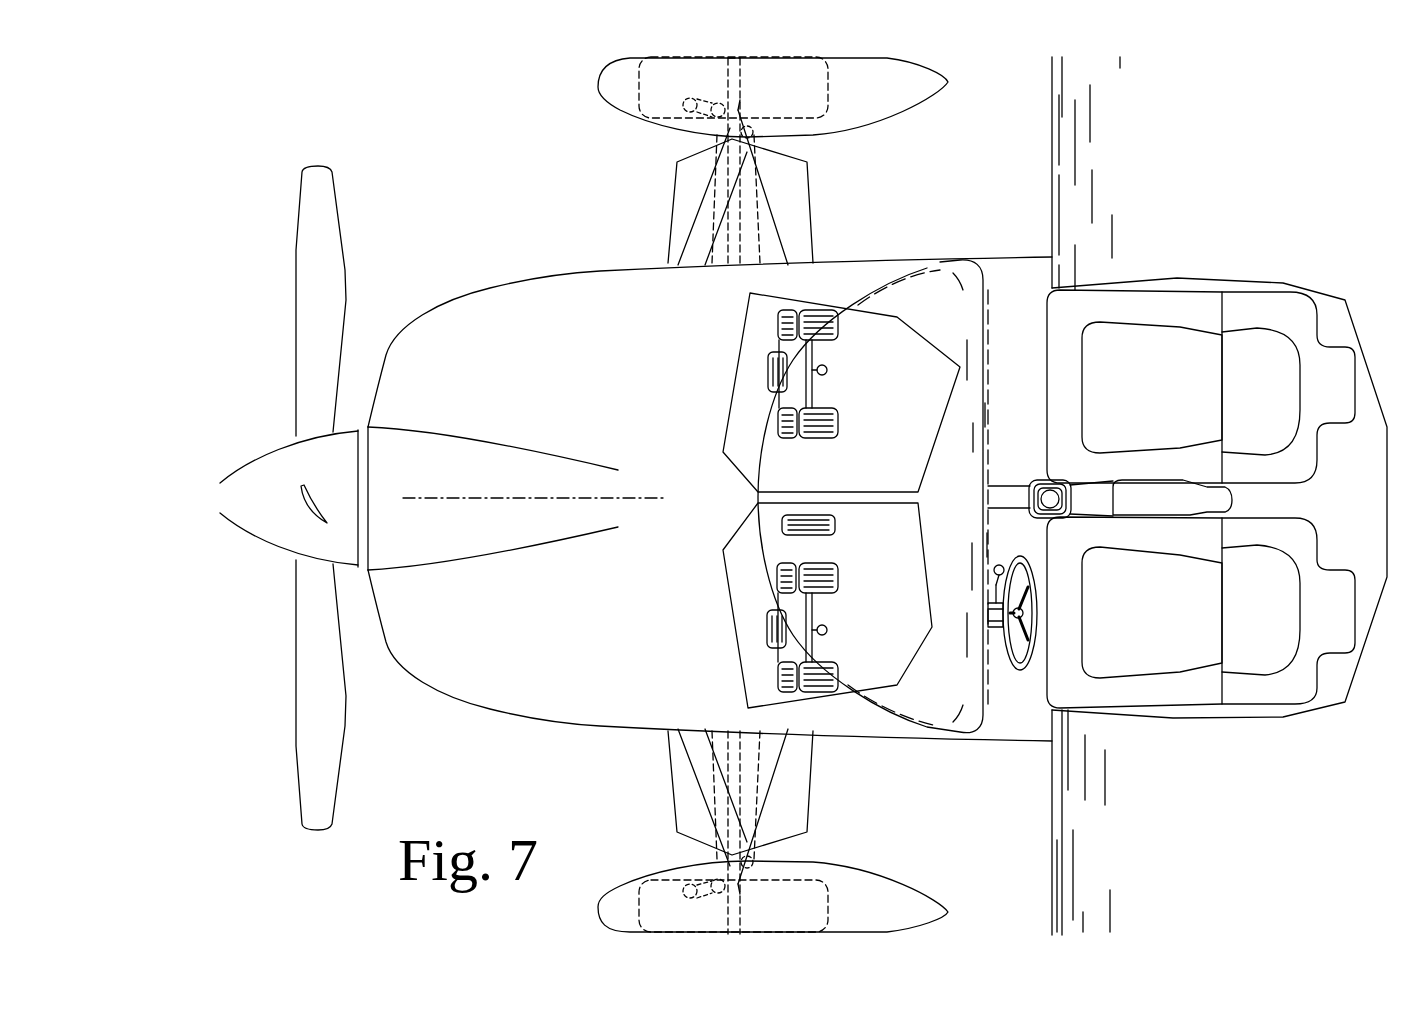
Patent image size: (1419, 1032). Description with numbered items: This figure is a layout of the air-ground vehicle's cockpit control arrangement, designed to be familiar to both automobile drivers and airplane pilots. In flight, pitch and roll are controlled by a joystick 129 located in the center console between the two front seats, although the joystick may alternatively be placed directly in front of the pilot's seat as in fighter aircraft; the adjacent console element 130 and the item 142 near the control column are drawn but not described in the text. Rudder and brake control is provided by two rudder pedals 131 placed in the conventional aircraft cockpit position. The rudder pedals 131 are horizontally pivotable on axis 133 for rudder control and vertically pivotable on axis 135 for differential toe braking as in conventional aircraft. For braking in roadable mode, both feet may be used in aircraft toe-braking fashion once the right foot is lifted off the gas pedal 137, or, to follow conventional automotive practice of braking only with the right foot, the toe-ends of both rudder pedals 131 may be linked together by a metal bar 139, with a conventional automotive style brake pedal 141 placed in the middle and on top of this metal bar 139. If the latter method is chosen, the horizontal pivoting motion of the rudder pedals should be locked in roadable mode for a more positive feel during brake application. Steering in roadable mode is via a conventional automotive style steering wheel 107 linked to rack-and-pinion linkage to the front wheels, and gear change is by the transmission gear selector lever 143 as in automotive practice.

The steering wheel 107 is at (987, 633).
The joystick 129 is at (1052, 507).
The center console armrest 130 is at (1137, 515).
The rudder pedals 131 is at (836, 577).
The axis 133 is at (827, 633).
The axis 135 is at (812, 608).
The gas pedal 137 is at (808, 536).
The metal bar 139 is at (778, 608).
The brake pedal 141 is at (766, 628).
The control column bracket 142 is at (987, 617).
The transmission gear selector lever 143 is at (1000, 565).